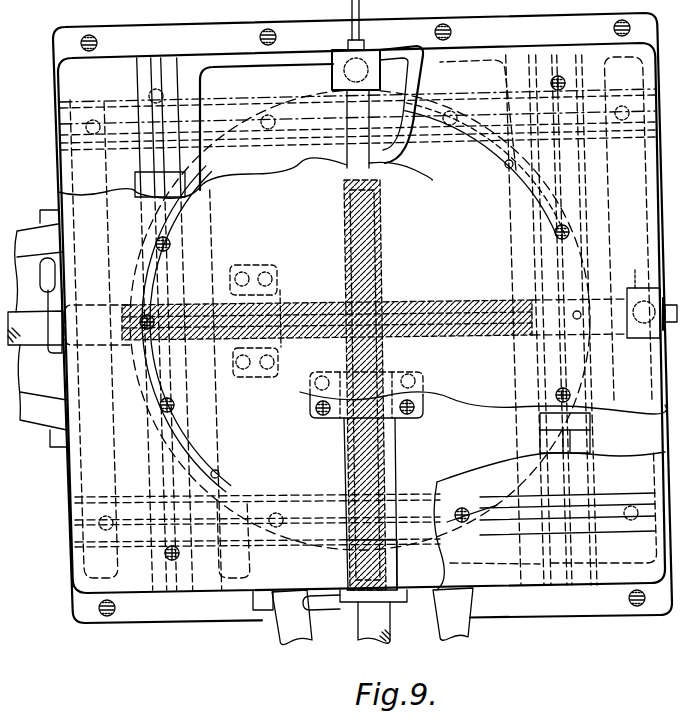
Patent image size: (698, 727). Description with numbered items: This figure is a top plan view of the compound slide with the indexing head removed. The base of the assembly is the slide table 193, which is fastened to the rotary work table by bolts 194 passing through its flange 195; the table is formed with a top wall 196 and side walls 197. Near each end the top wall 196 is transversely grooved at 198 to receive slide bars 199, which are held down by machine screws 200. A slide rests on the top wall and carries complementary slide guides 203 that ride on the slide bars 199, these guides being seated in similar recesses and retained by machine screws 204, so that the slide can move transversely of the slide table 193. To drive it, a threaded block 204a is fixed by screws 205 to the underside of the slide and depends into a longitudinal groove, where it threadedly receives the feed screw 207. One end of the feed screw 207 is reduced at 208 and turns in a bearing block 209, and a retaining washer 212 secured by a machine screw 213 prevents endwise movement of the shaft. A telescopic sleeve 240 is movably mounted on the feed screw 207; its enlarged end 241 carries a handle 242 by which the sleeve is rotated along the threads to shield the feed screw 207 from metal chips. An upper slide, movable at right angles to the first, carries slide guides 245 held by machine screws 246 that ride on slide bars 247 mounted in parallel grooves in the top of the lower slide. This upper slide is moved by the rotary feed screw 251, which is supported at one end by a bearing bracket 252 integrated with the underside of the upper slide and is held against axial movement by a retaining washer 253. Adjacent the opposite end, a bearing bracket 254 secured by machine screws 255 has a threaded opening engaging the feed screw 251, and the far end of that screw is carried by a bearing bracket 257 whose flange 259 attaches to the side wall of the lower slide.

The slide table 193 is at (72, 608).
The bolts 194 is at (268, 28).
The flange 195 is at (162, 30).
The top wall 196 is at (640, 492).
The side walls 197 is at (652, 504).
The transverse recess 198 is at (466, 100).
The slide bars 199 is at (459, 148).
The machine screws 200 is at (626, 511).
The slide guides 203 is at (445, 140).
The machine screws 204 is at (452, 150).
The threaded block 204a is at (285, 290).
The screws 205 is at (260, 266).
The feed screw 207 is at (455, 300).
The reduced end 208 is at (635, 338).
The bearing block 209 is at (635, 295).
The retaining washer 212 is at (666, 324).
The machine screw 213 is at (669, 304).
The telescopic sleeve 240 is at (94, 300).
The enlarged end 241 is at (55, 352).
The handle 242 is at (46, 278).
The slide guides 245 is at (135, 184).
The machine screws 246 is at (175, 244).
The slide bars 247 is at (170, 82).
The rotary feed screw 251 is at (345, 159).
The bearing bracket 252 is at (386, 46).
The retaining washer 253 is at (336, 42).
The bearing bracket 254 is at (333, 420).
The machine screws 255 is at (316, 412).
The bearing bracket 257 is at (293, 640).
The flange 259 is at (259, 606).